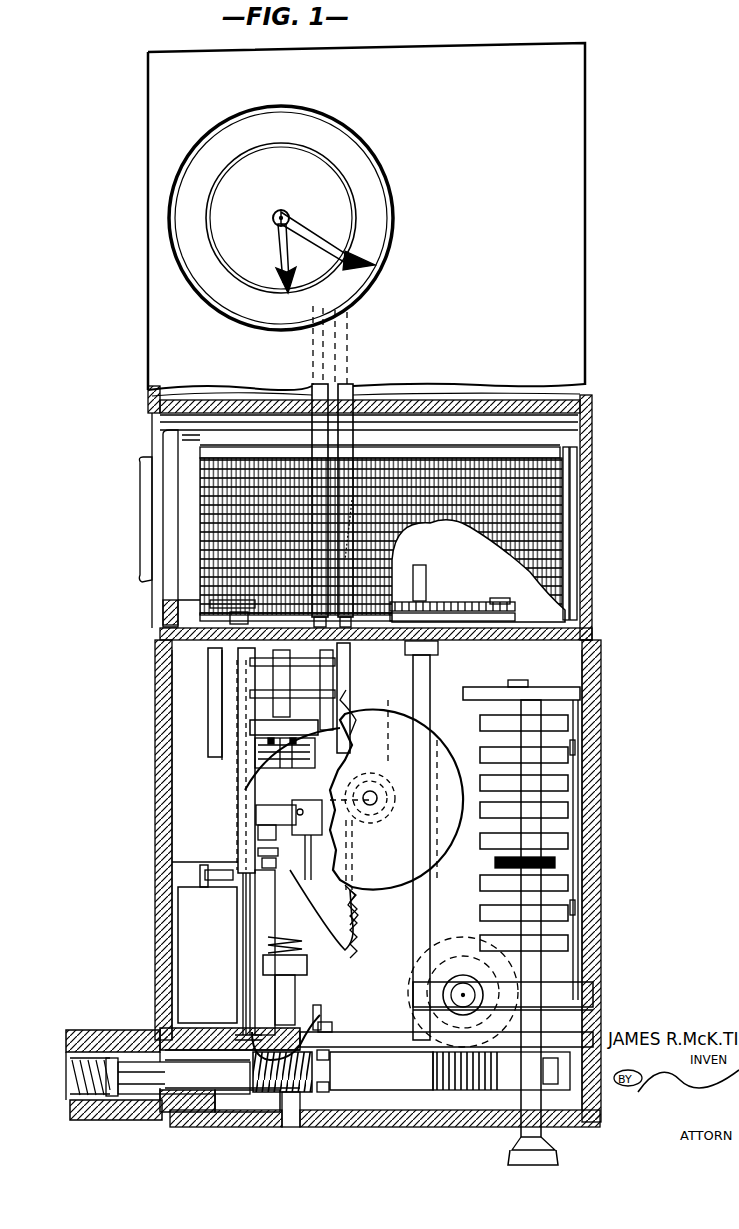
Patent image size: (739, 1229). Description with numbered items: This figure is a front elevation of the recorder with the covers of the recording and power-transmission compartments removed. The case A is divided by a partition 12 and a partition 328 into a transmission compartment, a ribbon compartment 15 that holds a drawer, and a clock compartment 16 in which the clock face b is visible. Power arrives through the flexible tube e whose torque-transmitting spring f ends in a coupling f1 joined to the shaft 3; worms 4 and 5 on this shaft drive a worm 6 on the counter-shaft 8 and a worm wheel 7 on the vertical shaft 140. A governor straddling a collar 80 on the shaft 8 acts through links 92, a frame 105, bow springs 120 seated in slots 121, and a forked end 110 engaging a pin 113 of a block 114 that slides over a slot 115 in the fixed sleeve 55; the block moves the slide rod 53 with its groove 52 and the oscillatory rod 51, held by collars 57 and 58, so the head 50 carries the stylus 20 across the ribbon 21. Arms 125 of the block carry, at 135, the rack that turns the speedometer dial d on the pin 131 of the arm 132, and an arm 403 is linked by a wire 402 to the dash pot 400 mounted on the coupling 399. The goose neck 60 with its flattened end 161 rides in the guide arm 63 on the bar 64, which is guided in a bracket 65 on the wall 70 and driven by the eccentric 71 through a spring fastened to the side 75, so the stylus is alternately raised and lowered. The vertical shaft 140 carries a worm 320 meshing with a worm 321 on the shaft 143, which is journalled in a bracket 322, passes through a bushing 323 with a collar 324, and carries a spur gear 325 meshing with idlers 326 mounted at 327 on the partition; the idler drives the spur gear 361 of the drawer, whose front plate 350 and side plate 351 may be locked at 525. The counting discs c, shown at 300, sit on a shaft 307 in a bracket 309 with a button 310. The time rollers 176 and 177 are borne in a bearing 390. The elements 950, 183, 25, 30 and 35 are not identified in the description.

The case A is at (583, 282).
The clock face b is at (372, 150).
The clock compartment 16 is at (190, 390).
The roller 176 is at (312, 392).
The roller 177 is at (352, 392).
The partition 328 is at (472, 400).
The carrying side plate 351 is at (190, 445).
The front plate 350 is at (162, 515).
The grid plate 950 is at (569, 470).
The ribbon 21 is at (574, 488).
The space 15 is at (578, 560).
The head 50 is at (200, 592).
The lock 525 is at (160, 610).
The spur gear 325 is at (450, 597).
The spur gear 361 is at (436, 583).
The idlers 326 is at (452, 599).
The idler mounting 327 is at (504, 595).
The partition 12 is at (508, 645).
The frame 105 is at (208, 713).
The rigid sleeve 55 is at (230, 680).
The bow springs 120 is at (232, 692).
The cross bar 183 is at (292, 674).
The counter-shaft 8 is at (284, 676).
The links 92 is at (284, 758).
The slots 121 is at (300, 742).
The slide rod 53 is at (240, 922).
The groove 52 is at (242, 950).
The oscillatory rod 51 is at (244, 984).
The collar 58 is at (240, 1014).
The dash pot 400 is at (207, 955).
The forked end 110 is at (258, 830).
The slidable block 114 is at (258, 805).
The pin 113 is at (262, 850).
The arms 125 is at (284, 820).
The arm 403 is at (215, 865).
The wire link 402 is at (200, 876).
The side of the case 75 is at (178, 858).
The speedometer dial d is at (380, 890).
The pin 131 is at (372, 810).
The stylus 20 is at (390, 760).
The rigid arm 132 is at (372, 708).
The cam graduation 25 is at (433, 743).
The cam graduation 30 is at (436, 780).
The cam graduation 35 is at (438, 824).
The slot 115 is at (350, 870).
The rack securing point 135 is at (338, 905).
The guide arm 63 is at (335, 915).
The bushing 323 is at (442, 652).
The shaft 143 is at (430, 898).
The collar 324 is at (432, 665).
The bearing 390 is at (377, 658).
The distance counting discs c is at (570, 725).
The bracket 309 is at (555, 700).
The button 310 is at (558, 1158).
The counting discs 300 is at (480, 755).
The shaft 307 is at (518, 825).
The worm wheel 7 is at (430, 975).
The vertical shaft 140 is at (463, 975).
The worm 321 is at (435, 990).
The worm 320 is at (480, 998).
The end wall of the case 70 is at (600, 975).
The bracket 65 is at (595, 1015).
The bracket 322 is at (450, 1071).
The eccentric 71 is at (335, 1060).
The worm 5 is at (425, 1092).
The worm 4 is at (297, 1080).
The driving worm 6 is at (310, 1101).
The shaft 3 is at (233, 1101).
The collar 80 is at (285, 956).
The collar 57 is at (290, 1003).
The goose neck 60 is at (286, 1053).
The flattened end 161 is at (322, 1005).
The flat bar 64 is at (330, 1024).
The flexible tube e is at (125, 1032).
The coupling 399 is at (160, 1030).
The torque transmitting spring f is at (66, 1080).
The coupling f1 is at (128, 1120).